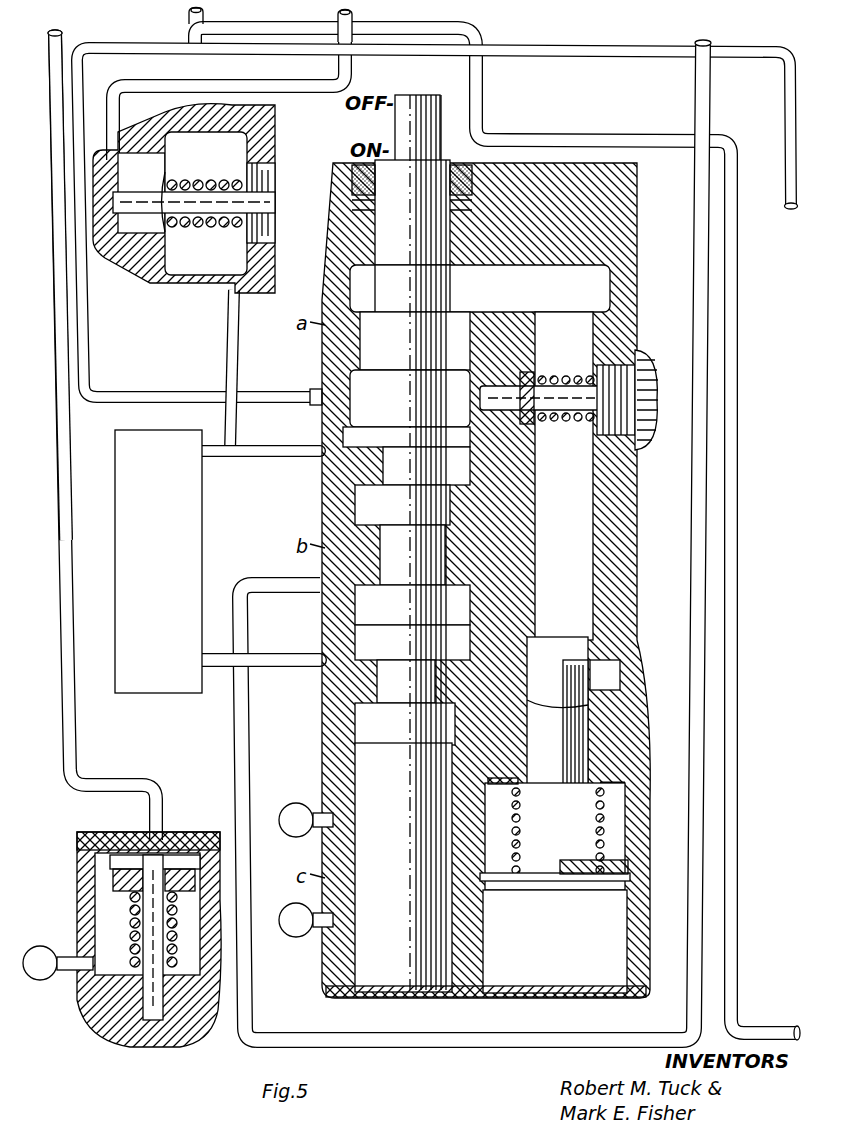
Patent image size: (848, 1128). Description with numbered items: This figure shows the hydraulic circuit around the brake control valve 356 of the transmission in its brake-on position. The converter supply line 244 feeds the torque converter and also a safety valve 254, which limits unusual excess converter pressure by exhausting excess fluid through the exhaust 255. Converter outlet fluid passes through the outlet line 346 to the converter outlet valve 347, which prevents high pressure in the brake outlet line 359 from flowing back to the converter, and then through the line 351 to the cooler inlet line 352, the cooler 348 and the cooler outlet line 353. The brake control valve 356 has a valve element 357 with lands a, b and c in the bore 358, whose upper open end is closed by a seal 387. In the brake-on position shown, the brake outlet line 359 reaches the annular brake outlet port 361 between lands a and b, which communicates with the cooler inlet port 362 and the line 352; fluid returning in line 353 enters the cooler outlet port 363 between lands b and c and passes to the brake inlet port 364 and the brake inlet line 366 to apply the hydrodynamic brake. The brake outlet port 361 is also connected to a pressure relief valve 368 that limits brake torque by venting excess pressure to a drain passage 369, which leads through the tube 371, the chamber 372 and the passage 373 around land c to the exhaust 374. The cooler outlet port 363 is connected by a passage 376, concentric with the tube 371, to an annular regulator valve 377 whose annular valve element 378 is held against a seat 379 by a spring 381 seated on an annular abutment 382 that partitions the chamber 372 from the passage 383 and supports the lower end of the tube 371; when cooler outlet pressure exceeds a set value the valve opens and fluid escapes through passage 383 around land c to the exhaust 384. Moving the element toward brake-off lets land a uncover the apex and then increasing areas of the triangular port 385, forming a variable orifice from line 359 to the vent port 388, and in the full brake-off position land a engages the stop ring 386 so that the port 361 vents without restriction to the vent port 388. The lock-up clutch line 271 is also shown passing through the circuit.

The converter supply line 244 is at (548, 44).
The safety valve 254 is at (72, 885).
The exhaust 255 is at (52, 982).
The lock-up clutch line 271 is at (190, 24).
The outlet line 346 is at (348, 83).
The converter outlet valve 347 is at (175, 290).
The cooler 348 is at (148, 700).
The line 351 is at (228, 335).
The cooler inlet line 352 is at (230, 460).
The cooler outlet line 353 is at (276, 667).
The brake control valve 356 is at (318, 440).
The valve element 357 is at (392, 477).
The bore 358 is at (362, 512).
The brake outlet line 359 is at (61, 48).
The brake outlet port 361 is at (352, 378).
The cooler inlet port 362 is at (342, 440).
The cooler outlet port 363 is at (352, 690).
The brake inlet port 364 is at (352, 588).
The brake inlet line 366 is at (712, 98).
The pressure relief valve 368 is at (530, 378).
The drain passage 369 is at (580, 505).
The tube 371 is at (600, 655).
The chamber 372 is at (572, 985).
The passage 373 is at (482, 925).
The exhaust 374 is at (297, 938).
The passage 376 is at (608, 735).
The annular regulator valve 377 is at (612, 830).
The annular valve element 378 is at (612, 795).
The seat 379 is at (612, 782).
The spring 381 is at (514, 860).
The annular abutment 382 is at (606, 882).
The passage 383 is at (460, 808).
The exhaust 384 is at (297, 803).
The triangular port 385 is at (462, 318).
The stop ring 386 is at (455, 255).
The seal 387 is at (452, 165).
The vent port 388 is at (598, 285).